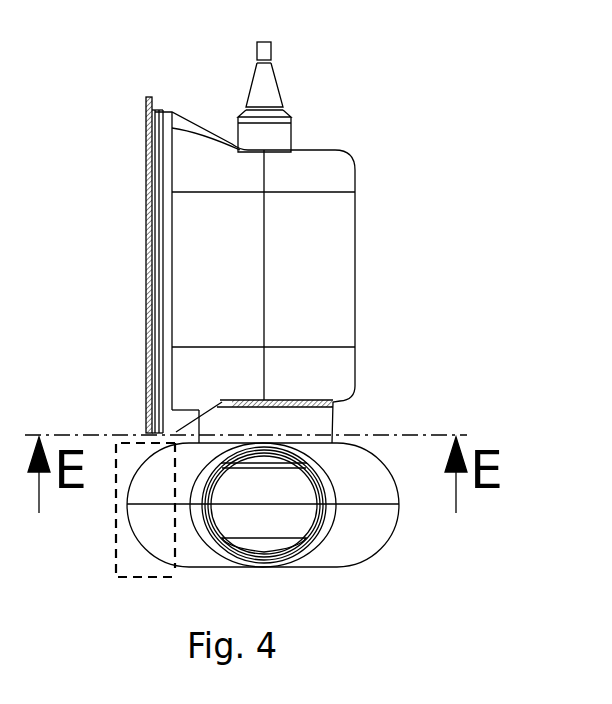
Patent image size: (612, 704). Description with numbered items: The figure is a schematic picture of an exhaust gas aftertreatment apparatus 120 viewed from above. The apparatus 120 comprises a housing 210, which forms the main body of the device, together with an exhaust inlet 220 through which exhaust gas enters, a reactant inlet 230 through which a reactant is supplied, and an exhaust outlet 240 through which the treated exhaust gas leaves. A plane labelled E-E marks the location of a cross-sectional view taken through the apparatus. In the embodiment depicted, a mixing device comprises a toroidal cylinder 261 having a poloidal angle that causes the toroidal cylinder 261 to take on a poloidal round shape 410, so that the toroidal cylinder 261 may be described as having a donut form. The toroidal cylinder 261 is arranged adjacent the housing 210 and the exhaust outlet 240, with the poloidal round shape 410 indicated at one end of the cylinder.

The exhaust gas aftertreatment apparatus 120 is at (569, 175).
The housing 210 is at (273, 260).
The exhaust inlet 220 is at (122, 265).
The reactant inlet 230 is at (289, 81).
The exhaust outlet 240 is at (295, 483).
The toroidal cylinder 261 is at (303, 516).
The poloidal round shape 410 is at (100, 521).